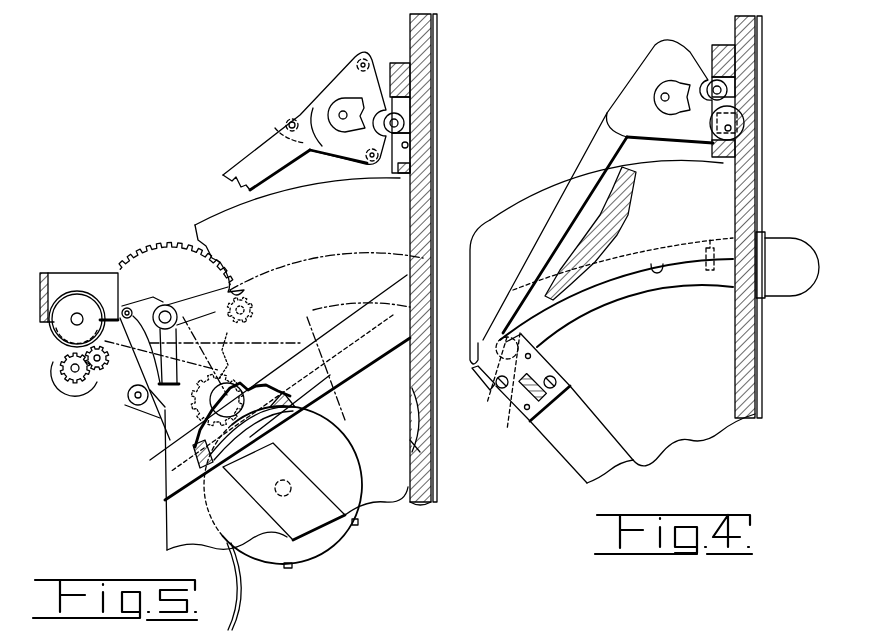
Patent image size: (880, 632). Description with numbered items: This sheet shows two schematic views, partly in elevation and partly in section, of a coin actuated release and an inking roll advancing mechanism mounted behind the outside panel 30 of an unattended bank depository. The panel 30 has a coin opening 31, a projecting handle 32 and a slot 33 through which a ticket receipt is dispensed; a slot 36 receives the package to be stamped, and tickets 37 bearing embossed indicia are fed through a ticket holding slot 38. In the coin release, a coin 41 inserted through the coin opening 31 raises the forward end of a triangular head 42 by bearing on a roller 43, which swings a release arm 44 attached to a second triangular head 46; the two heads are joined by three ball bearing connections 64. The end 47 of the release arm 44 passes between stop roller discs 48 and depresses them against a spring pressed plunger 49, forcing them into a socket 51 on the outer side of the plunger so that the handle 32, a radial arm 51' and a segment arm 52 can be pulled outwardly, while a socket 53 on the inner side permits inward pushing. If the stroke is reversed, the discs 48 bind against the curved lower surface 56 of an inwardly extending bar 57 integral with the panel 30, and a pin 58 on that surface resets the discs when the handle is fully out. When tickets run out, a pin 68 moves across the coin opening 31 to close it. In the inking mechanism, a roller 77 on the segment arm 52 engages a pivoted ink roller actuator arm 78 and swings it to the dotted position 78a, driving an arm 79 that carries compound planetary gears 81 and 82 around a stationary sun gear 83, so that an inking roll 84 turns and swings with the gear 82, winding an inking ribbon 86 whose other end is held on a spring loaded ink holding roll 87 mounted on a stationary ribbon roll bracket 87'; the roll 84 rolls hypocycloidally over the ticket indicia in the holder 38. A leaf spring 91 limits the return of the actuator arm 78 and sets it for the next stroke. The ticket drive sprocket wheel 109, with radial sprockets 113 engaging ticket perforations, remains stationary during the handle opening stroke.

In FIG. 5, the outside panel 30 is at (423, 212).
In FIG. 4, the outside panel 30 is at (748, 343).
In FIG. 5, the coin opening 31 is at (427, 128).
In FIG. 4, the coin opening 31 is at (758, 110).
In FIG. 4, the handle 32 is at (783, 247).
In FIG. 5, the slot 33 is at (423, 460).
In FIG. 5, the slot 36 is at (198, 440).
In FIG. 5, the tickets 37 is at (236, 625).
In FIG. 5, the ticket holding slot 38 is at (235, 457).
In FIG. 4, the coin 41 is at (748, 128).
In FIG. 5, the triangular head 42 is at (336, 86).
In FIG. 4, the triangular head 42 is at (655, 70).
In FIG. 4, the roller 43 is at (708, 78).
In FIG. 4, the release arm 44 is at (588, 152).
In FIG. 5, the second triangular head 46 is at (305, 108).
In FIG. 4, the end of release arm 47 is at (473, 377).
In FIG. 4, the stop roller discs 48 is at (521, 331).
In FIG. 4, the spring pressed plunger 49 is at (499, 443).
In FIG. 4, the socket 51 is at (536, 377).
In FIG. 5, the radial arm 51' is at (280, 407).
In FIG. 4, the radial arm 51' is at (581, 449).
In FIG. 4, the segment arm 52 is at (636, 290).
In FIG. 4, the socket 53 is at (495, 381).
In FIG. 4, the curved lower surface 56 is at (668, 262).
In FIG. 5, the inwardly extending bar 57 is at (429, 612).
In FIG. 4, the inwardly extending bar 57 is at (513, 210).
In FIG. 4, the pin 58 is at (710, 273).
In FIG. 5, the ball bearing connections 64 is at (364, 58).
In FIG. 5, the pin 68 is at (408, 155).
In FIG. 5, the roller 77 is at (130, 404).
In FIG. 5, the ink roller actuator arm 78 is at (198, 390).
In FIG. 5, the dotted line position of actuator arm 78a is at (238, 273).
In FIG. 5, the arm 79 is at (124, 308).
In FIG. 5, the planetary gear 81 is at (128, 393).
In FIG. 5, the planetary gear 82 is at (70, 380).
In FIG. 5, the sun gear 83 is at (147, 250).
In FIG. 5, the inking roll 84 is at (86, 358).
In FIG. 5, the inking ribbon 86 is at (63, 335).
In FIG. 5, the ink holding roll 87 is at (77, 294).
In FIG. 5, the ribbon roll bracket 87' is at (77, 259).
In FIG. 5, the leaf spring 91 is at (166, 305).
In FIG. 5, the ticket drive sprocket wheel 109 is at (312, 560).
In FIG. 5, the sprockets 113 is at (358, 521).